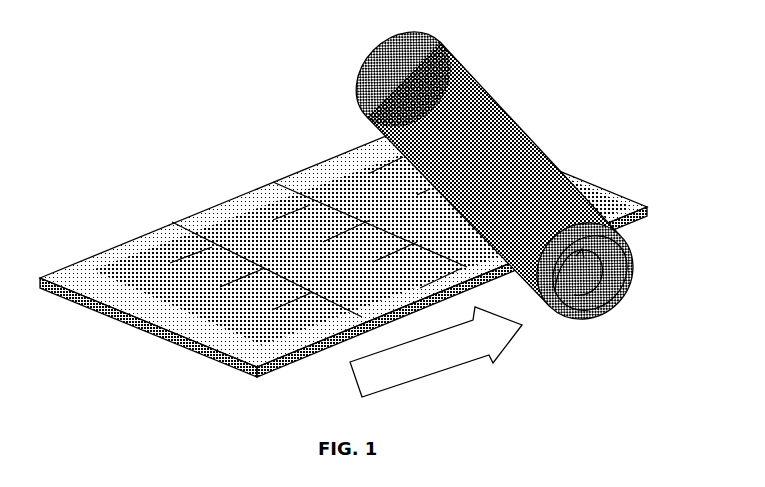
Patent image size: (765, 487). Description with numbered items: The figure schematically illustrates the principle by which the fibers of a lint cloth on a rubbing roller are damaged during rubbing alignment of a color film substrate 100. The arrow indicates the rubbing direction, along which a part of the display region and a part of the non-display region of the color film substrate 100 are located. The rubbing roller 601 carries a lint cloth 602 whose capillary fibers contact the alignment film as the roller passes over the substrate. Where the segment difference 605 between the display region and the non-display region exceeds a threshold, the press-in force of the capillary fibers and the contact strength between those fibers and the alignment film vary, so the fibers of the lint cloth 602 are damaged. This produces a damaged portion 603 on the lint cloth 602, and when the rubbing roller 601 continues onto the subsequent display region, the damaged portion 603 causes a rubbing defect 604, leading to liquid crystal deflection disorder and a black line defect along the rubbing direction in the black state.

The color film substrate 100 is at (237, 202).
The rubbing roller 601 is at (603, 275).
The lint cloth 602 is at (498, 176).
The damaged portion 603 is at (445, 62).
The rubbing defect 604 is at (283, 202).
The segment difference 605 is at (305, 186).